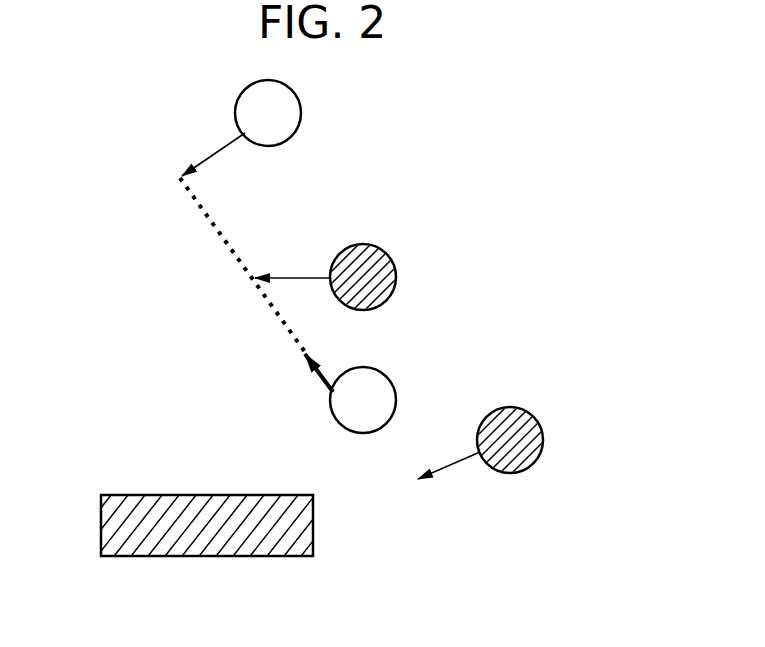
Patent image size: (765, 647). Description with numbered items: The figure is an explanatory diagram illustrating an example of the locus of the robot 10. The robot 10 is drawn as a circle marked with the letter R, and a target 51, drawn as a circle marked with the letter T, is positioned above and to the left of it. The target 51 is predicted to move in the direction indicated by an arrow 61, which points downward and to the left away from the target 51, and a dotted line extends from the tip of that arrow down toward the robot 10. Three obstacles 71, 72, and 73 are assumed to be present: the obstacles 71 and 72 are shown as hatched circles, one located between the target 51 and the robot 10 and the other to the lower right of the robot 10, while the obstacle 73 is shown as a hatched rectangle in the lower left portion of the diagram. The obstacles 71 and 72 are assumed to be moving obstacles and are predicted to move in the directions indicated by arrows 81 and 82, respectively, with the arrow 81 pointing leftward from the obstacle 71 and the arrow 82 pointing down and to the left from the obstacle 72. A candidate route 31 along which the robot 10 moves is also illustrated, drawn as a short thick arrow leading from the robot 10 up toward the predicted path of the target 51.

The robot 10 is at (396, 386).
The candidate route 31 is at (328, 377).
The target 51 is at (301, 101).
The arrow 61 is at (212, 150).
The obstacle 71 is at (393, 259).
The obstacle 72 is at (543, 432).
The obstacle 73 is at (190, 495).
The arrow 81 is at (295, 275).
The arrow 82 is at (451, 467).